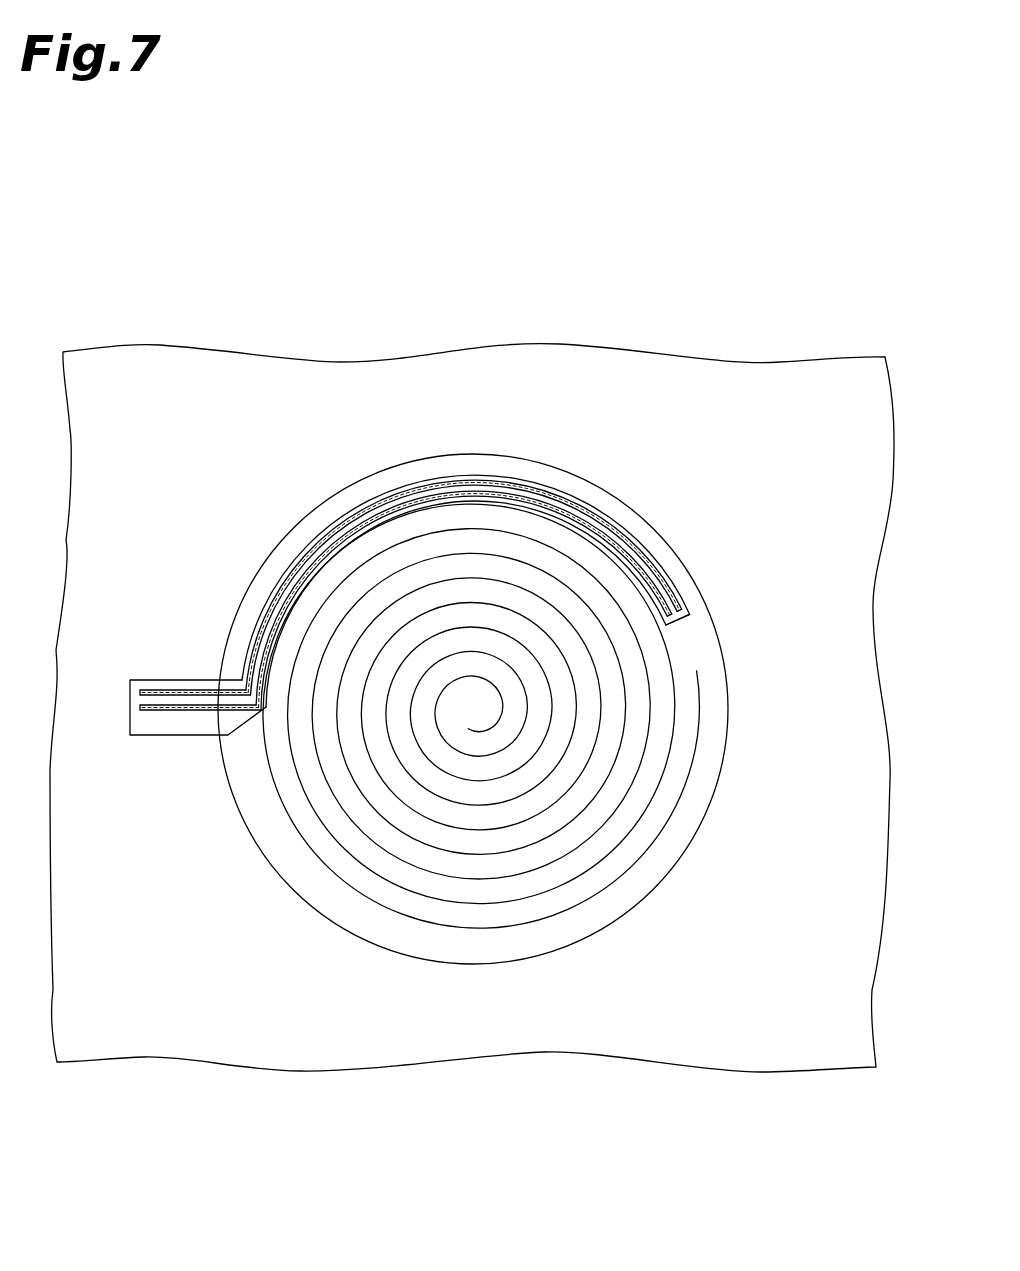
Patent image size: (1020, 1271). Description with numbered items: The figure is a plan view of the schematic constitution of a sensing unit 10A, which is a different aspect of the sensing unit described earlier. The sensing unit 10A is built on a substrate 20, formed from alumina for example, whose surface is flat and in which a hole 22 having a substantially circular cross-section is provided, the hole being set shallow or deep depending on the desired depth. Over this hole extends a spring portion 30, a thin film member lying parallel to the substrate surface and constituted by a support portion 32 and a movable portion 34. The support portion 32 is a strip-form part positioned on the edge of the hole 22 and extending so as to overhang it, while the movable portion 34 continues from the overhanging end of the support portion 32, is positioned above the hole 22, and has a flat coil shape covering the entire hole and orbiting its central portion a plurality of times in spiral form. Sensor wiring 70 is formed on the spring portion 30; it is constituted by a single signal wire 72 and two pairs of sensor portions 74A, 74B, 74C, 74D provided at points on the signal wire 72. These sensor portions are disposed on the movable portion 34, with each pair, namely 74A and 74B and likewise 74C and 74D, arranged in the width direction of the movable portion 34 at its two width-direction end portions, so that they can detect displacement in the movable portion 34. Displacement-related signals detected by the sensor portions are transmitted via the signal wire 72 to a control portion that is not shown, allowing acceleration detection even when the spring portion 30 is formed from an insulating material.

The sensing unit 10A is at (152, 278).
The substrate 20 is at (803, 358).
The hole 22 is at (274, 854).
The spring portion 30 is at (682, 803).
The support portion 32 is at (167, 723).
The movable portion 34 is at (598, 872).
The sensor wiring 70 is at (310, 543).
The signal wire 72 is at (180, 688).
The sensor portion 74A is at (367, 513).
The sensor portion 74B is at (390, 492).
The sensor portion 74C is at (655, 605).
The sensor portion 74D is at (655, 628).